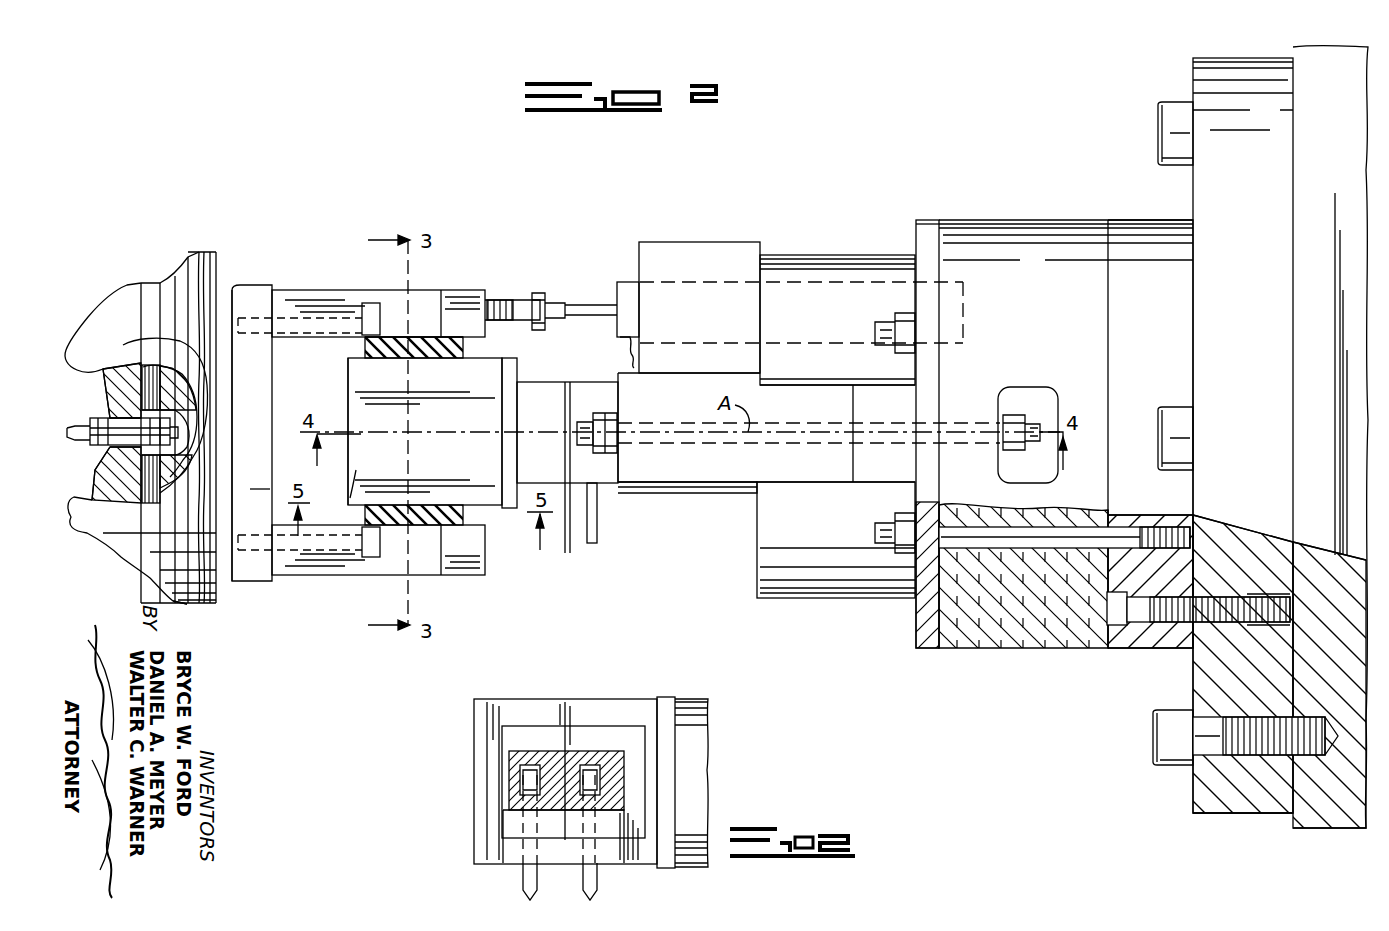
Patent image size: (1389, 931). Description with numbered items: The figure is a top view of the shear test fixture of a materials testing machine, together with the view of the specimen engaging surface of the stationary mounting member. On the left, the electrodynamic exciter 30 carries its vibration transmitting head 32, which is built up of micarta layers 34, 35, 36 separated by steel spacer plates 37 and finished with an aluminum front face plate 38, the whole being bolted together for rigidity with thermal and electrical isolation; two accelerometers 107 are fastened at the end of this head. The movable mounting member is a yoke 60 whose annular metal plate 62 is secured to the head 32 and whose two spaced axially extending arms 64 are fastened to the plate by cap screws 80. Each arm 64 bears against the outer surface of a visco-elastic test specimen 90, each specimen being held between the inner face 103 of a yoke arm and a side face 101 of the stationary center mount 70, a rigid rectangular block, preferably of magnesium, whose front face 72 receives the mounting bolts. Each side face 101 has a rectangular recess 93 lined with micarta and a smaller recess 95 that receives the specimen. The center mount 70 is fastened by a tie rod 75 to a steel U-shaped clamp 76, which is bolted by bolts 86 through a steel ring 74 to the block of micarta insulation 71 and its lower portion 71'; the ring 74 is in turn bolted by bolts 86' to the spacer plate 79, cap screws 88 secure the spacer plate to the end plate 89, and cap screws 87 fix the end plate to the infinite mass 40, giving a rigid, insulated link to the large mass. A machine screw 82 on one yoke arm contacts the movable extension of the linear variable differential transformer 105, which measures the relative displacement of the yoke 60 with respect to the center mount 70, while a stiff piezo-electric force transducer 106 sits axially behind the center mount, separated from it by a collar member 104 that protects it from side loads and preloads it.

In FIG. 2, the electrodynamic exciter 30 is at (158, 270).
In FIG. 2, the head 32 is at (175, 604).
In FIG. 2, the micarta layer 34 is at (190, 257).
In FIG. 2, the micarta layer 35 is at (212, 252).
In FIG. 2, the micarta layer 36 is at (148, 300).
In FIG. 2, the steel spacer plate 37 is at (160, 350).
In FIG. 2, the front face plate 38 is at (230, 410).
In FIG. 2, the infinite mass 40 is at (1298, 66).
In FIG. 2, the yoke 60 is at (322, 282).
In FIG. 2, the annular metal plate 62 is at (260, 285).
In FIG. 2, the yoke arm 64 is at (472, 299).
In FIG. 2, the center mount 70 is at (432, 433).
In FIG. 5, the center mount 70 is at (530, 705).
In FIG. 2, the block of micarta insulation 71 is at (1066, 413).
In FIG. 2, the lower support block 71' is at (1066, 603).
In FIG. 2, the front face 72 is at (348, 381).
In FIG. 2, the steel ring 74 is at (922, 242).
In FIG. 2, the tie rod 75 is at (533, 381).
In FIG. 5, the tie rod 75 is at (695, 700).
In FIG. 2, the U-shaped clamp 76 is at (738, 498).
In FIG. 2, the spacer plate 79 is at (1133, 228).
In FIG. 2, the cap screw 80 is at (370, 312).
In FIG. 2, the machine screw 82 is at (520, 298).
In FIG. 2, the bolt 86 is at (597, 404).
In FIG. 2, the bolt 86' is at (1032, 513).
In FIG. 2, the cap screw 87 is at (1168, 736).
In FIG. 2, the cap screw 88 is at (1147, 628).
In FIG. 2, the end plate 89 is at (1238, 812).
In FIG. 2, the visco-elastic test specimen 90 is at (440, 350).
In FIG. 5, the recess 93 is at (483, 727).
In FIG. 5, the smaller recess 95 is at (512, 785).
In FIG. 2, the side face 101 is at (367, 470).
In FIG. 5, the side face 101 is at (614, 703).
In FIG. 2, the inner face 103 is at (360, 347).
In FIG. 2, the collar member 104 is at (572, 482).
In FIG. 2, the linear variable differential transformer 105 is at (606, 286).
In FIG. 2, the force transducer 106 is at (600, 490).
In FIG. 2, the accelerometer 107 is at (103, 423).